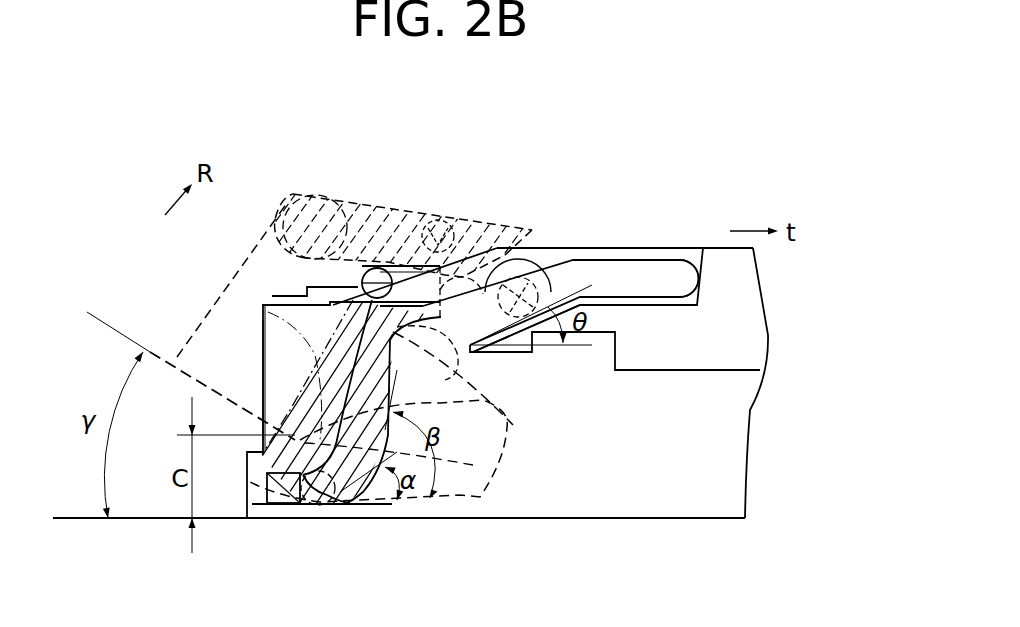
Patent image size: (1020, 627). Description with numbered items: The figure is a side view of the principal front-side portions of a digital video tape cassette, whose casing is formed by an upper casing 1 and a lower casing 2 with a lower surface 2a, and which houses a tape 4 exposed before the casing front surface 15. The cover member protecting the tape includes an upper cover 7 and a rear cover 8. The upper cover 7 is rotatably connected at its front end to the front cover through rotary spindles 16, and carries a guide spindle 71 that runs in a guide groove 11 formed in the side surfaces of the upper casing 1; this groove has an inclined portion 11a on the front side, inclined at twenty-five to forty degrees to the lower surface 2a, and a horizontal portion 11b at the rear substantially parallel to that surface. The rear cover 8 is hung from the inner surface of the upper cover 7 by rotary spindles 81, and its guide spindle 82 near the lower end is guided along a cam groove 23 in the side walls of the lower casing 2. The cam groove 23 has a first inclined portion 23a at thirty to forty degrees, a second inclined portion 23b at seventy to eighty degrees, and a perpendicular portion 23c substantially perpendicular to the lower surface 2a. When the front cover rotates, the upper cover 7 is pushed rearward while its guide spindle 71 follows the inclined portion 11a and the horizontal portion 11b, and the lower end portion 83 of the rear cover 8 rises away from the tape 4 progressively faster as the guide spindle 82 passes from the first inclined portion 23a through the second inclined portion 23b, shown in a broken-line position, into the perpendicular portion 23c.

The upper casing 1 is at (748, 351).
The lower casing 2 is at (698, 505).
The lower surface 2a is at (648, 519).
The tape 4 is at (227, 290).
The upper cover 7 is at (420, 215).
The rear cover 8 is at (266, 302).
The guide groove 11 is at (677, 178).
The inclined portion 11a is at (487, 283).
The horizontal portion 11b is at (663, 268).
The casing front surface 15 is at (250, 331).
The rotary spindles 16 is at (305, 215).
The cam groove 23 is at (593, 423).
The first inclined portion 23a is at (340, 487).
The second inclined portion 23b is at (483, 473).
The perpendicular portion 23c is at (377, 367).
The guide spindle 71 is at (547, 268).
The rotary spindles 81 is at (378, 267).
The guide spindle 82 is at (318, 490).
The lower end portion 83 is at (263, 453).